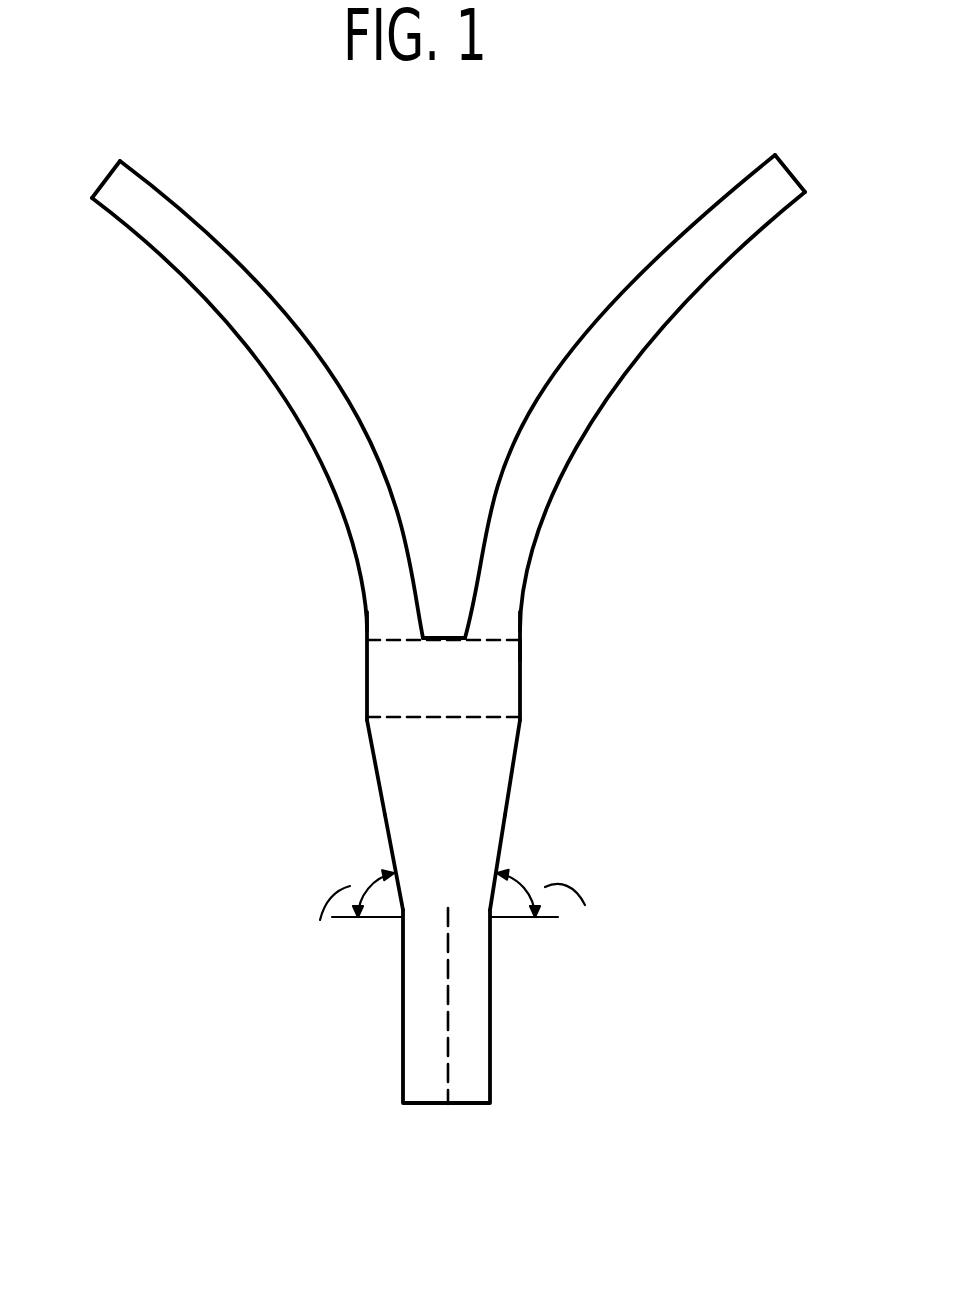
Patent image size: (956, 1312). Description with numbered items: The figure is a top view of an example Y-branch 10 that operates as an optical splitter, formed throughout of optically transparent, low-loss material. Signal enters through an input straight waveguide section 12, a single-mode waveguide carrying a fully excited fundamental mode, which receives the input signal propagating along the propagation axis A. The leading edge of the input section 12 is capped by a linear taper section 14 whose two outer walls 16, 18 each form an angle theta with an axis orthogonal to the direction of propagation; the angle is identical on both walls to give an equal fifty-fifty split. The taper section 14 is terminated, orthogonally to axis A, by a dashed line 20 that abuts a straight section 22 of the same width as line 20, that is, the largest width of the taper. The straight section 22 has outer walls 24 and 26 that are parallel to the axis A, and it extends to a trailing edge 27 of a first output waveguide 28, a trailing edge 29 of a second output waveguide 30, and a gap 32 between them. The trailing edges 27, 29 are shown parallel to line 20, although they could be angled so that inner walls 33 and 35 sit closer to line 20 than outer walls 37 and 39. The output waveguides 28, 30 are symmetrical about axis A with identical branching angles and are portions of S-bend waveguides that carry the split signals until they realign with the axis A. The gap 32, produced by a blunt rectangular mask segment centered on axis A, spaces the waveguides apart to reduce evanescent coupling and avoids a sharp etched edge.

The Y-branch 10 is at (853, 501).
The input straight waveguide section 12 is at (490, 1033).
The linear taper section 14 is at (483, 840).
The outer wall of the linear taper section 16 is at (517, 765).
The outer wall of the linear taper section 18 is at (388, 847).
The dashed line 20 is at (433, 718).
The straight section 22 is at (393, 693).
The outer wall of the straight section 24 is at (523, 698).
The outer wall of the straight section 26 is at (363, 685).
The trailing edge of the first output waveguide 27 is at (492, 640).
The first output waveguide 28 is at (613, 387).
The trailing edge of the second output waveguide 29 is at (390, 640).
The second output waveguide 30 is at (203, 291).
The gap 32 is at (437, 626).
The inner wall of the first output waveguide 33 is at (363, 618).
The inner wall of the second output waveguide 35 is at (523, 620).
The outer wall of the first output waveguide 37 is at (347, 398).
The outer wall of the second output waveguide 39 is at (540, 397).
The propagation axis A is at (448, 1113).